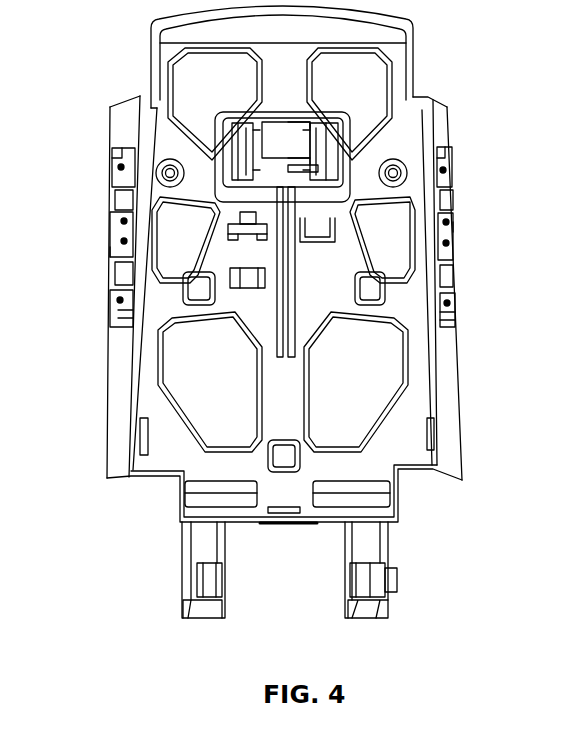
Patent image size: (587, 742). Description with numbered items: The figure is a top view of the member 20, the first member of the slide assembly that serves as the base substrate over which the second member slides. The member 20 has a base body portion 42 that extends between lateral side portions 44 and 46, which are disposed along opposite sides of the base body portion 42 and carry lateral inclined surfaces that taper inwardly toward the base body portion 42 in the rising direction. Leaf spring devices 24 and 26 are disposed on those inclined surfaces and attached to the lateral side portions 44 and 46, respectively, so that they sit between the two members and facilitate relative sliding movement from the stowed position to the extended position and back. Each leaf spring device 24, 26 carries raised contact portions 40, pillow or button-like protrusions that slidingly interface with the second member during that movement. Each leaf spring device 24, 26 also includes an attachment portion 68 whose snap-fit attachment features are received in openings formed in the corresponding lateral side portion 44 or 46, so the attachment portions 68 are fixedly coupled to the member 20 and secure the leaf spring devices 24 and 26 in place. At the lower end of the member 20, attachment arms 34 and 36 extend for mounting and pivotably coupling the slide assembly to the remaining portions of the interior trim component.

The member 20 is at (395, 47).
The leaf spring device 24 is at (107, 247).
The leaf spring device 26 is at (453, 227).
The attachment arm 34 is at (222, 580).
The attachment arm 36 is at (393, 580).
The raised contact portion 40 is at (118, 160).
The base body portion 42 is at (280, 392).
The lateral side portion 44 is at (120, 388).
The lateral side portion 46 is at (450, 423).
The attachment portion 68 is at (117, 230).